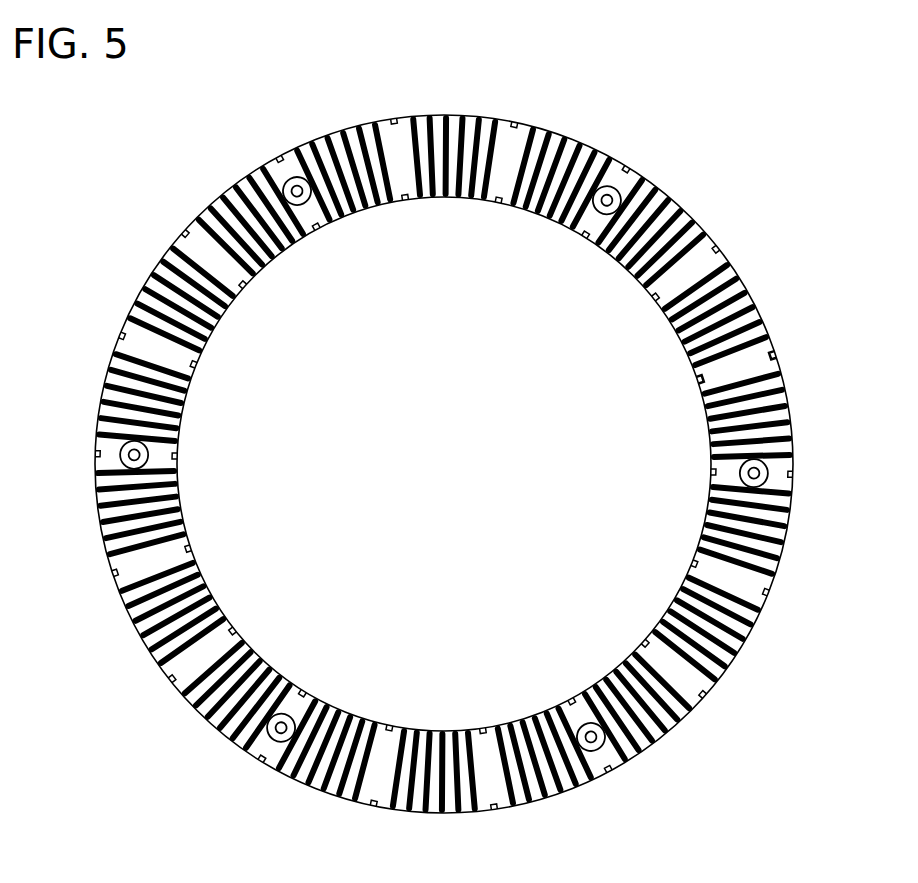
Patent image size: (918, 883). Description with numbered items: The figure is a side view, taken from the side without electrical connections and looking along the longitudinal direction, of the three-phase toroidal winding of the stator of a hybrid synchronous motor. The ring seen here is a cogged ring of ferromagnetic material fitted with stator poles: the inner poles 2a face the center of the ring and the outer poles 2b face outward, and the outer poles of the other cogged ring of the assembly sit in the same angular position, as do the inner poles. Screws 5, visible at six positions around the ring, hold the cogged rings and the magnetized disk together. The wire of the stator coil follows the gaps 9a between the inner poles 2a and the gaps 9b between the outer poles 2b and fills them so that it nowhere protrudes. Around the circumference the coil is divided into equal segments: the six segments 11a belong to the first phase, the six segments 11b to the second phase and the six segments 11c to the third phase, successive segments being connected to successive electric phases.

The inner poles 2a is at (703, 375).
The outer poles 2b is at (773, 347).
The screws 5 is at (769, 476).
The gaps 9a is at (705, 377).
The gaps 9b is at (773, 352).
The segments 11a is at (357, 213).
The segments 11b is at (453, 202).
The segments 11c is at (277, 255).